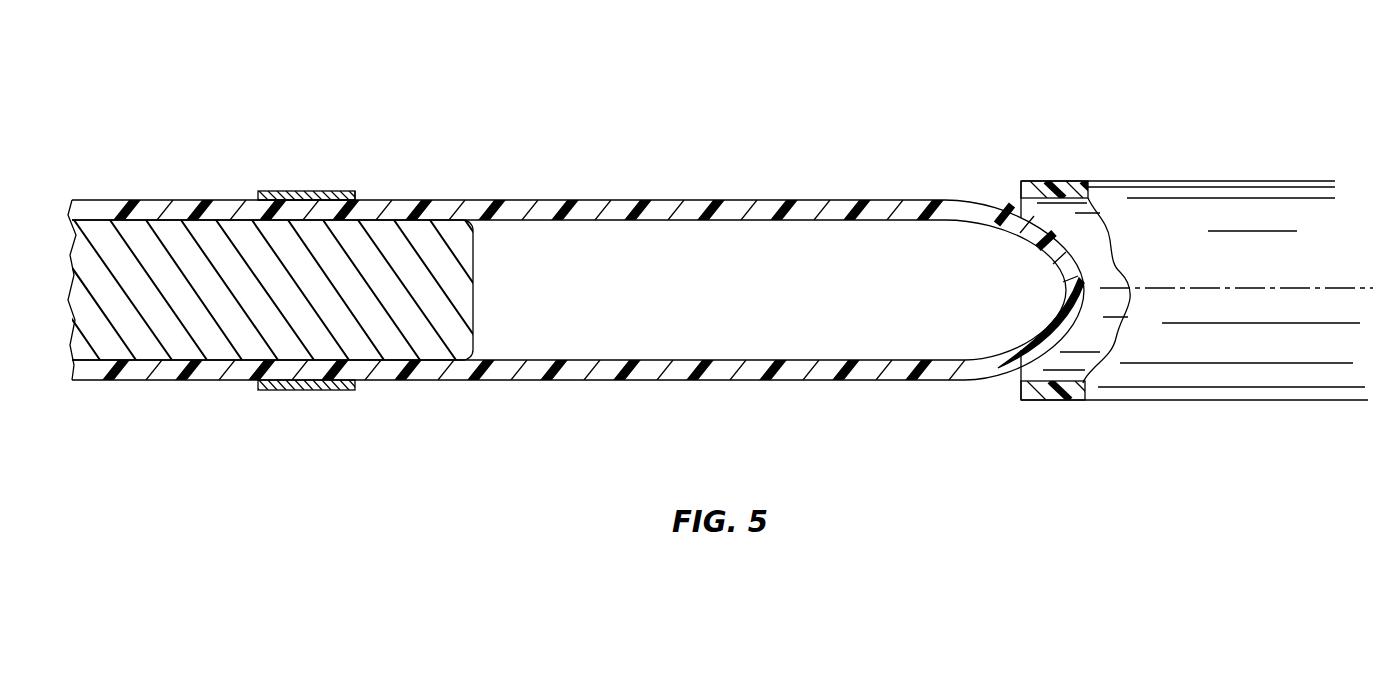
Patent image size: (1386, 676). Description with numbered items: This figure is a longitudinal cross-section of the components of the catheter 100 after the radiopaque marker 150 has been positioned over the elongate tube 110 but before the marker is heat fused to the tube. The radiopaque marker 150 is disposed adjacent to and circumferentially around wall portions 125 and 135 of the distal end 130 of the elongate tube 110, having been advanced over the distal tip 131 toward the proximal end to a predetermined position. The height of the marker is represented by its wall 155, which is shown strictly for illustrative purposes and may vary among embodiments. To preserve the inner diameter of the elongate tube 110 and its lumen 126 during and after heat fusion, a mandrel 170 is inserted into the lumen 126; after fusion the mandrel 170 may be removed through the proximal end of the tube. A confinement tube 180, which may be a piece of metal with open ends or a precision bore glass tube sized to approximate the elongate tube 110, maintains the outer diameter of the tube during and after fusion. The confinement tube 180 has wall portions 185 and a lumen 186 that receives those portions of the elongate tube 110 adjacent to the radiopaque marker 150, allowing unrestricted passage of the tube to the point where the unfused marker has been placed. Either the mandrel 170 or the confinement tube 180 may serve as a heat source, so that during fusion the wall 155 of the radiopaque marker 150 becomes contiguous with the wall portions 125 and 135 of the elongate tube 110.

The catheter 100 is at (580, 108).
The elongate tube 110 is at (154, 198).
The wall portion 125 is at (282, 208).
The lumen 126 is at (580, 302).
The distal end 130 is at (691, 183).
The distal tip 131 is at (1043, 352).
The wall portion 135 is at (318, 369).
The radiopaque marker 150 is at (294, 191).
The wall 155 is at (356, 197).
The mandrel 170 is at (257, 316).
The confinement tube 180 is at (1217, 167).
The wall portions 185 is at (1042, 190).
The lumen 186 is at (1100, 243).